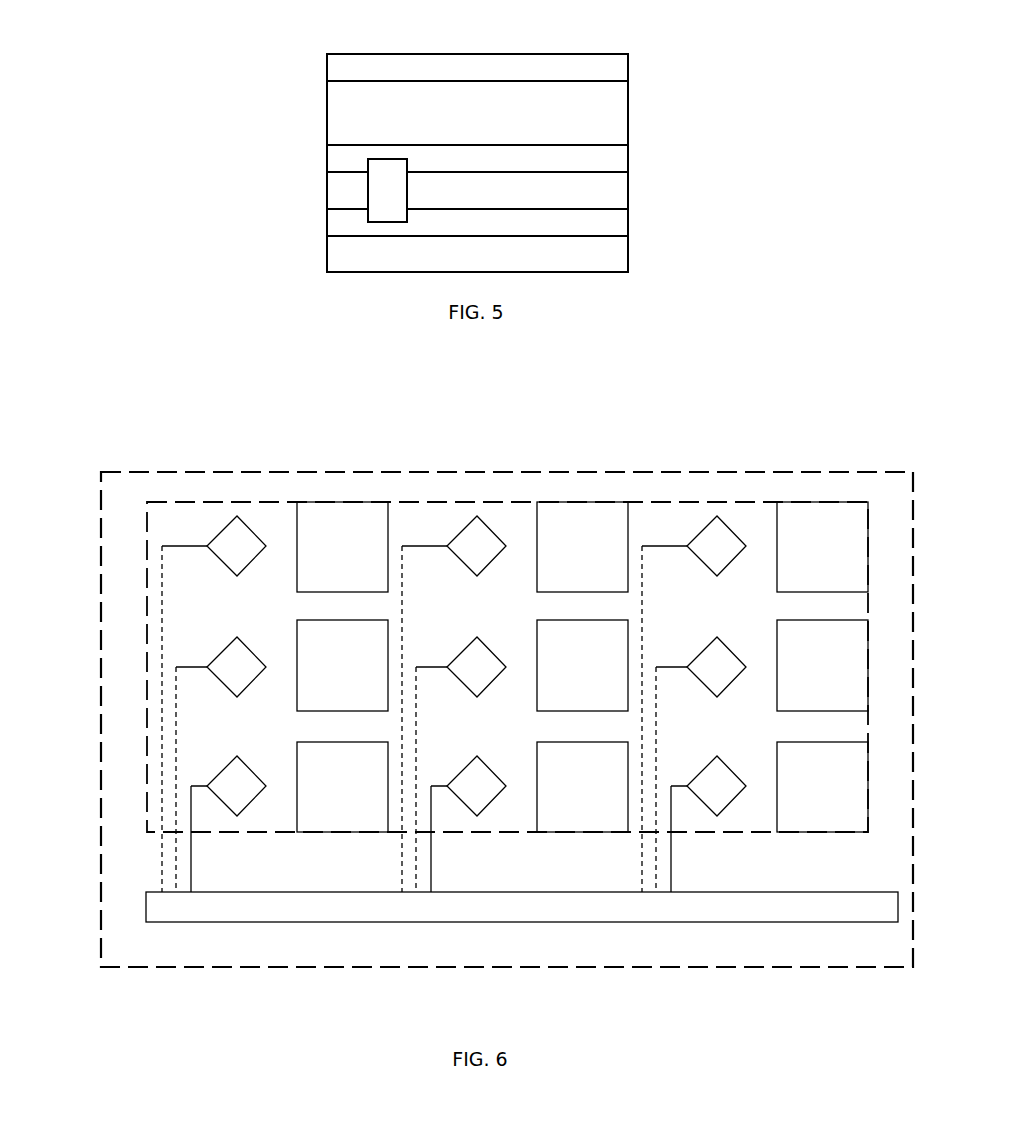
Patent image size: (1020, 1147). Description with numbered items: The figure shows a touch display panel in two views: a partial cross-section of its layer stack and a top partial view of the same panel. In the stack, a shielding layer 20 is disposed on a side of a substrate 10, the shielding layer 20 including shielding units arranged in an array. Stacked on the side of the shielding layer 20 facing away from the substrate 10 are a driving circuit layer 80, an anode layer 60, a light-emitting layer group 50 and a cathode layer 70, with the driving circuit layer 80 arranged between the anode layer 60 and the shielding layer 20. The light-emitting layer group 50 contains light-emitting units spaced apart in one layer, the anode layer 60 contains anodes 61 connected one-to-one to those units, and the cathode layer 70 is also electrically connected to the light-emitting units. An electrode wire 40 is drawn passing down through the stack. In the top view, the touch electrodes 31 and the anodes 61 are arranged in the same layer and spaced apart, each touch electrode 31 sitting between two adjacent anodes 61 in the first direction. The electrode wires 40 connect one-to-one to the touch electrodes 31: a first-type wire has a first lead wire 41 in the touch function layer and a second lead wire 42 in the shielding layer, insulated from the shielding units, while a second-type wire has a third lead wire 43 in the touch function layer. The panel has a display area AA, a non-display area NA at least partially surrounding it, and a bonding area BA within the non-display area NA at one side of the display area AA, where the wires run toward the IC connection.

In FIG. 5, the substrate 10 is at (628, 258).
In FIG. 5, the shielding layer 20 is at (628, 227).
In FIG. 5, the driving circuit layer 80 is at (628, 195).
In FIG. 5, the anode layer 60 is at (628, 155).
In FIG. 5, the light-emitting layer group 50 is at (628, 114).
In FIG. 5, the cathode layer 70 is at (628, 65).
In FIG. 5, the electrode wire 40 is at (385, 195).
In FIG. 6, the first lead wire 41 is at (182, 546).
In FIG. 6, the touch electrode 31 is at (237, 546).
In FIG. 6, the anode 61 is at (342, 546).
In FIG. 6, the second lead wire 42 is at (160, 726).
In FIG. 6, the third lead wire 43 is at (192, 863).
In FIG. 6, the display area AA is at (658, 517).
In FIG. 6, the non-display area NA is at (657, 937).
In FIG. 6, the bonding area BA is at (778, 907).